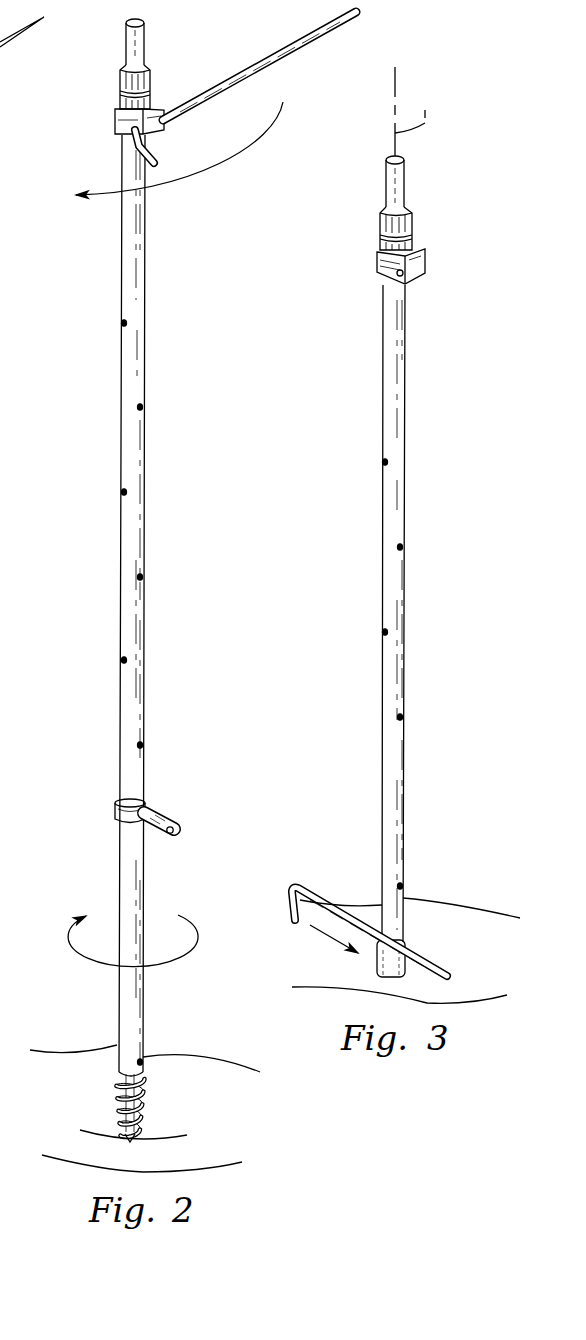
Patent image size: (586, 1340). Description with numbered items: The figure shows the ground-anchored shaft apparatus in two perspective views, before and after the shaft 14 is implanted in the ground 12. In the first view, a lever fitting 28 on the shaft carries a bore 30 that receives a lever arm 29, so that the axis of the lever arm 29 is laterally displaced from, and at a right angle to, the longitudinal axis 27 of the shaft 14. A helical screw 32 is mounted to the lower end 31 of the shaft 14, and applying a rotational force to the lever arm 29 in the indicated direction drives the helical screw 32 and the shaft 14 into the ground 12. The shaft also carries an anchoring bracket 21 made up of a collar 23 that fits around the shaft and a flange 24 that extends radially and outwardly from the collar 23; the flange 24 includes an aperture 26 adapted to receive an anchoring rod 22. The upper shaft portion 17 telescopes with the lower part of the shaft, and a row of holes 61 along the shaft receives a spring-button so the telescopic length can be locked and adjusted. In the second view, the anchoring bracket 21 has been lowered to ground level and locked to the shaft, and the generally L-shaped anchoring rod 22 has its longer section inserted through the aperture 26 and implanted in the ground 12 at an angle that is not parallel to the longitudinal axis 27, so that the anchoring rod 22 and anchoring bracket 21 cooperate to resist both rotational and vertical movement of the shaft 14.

In FIG. 3, the ground 12 is at (488, 962).
In FIG. 2, the shaft 14 is at (150, 557).
In FIG. 2, the upper shaft portion 17 is at (125, 41).
In FIG. 2, the anchoring bracket 21 is at (113, 821).
In FIG. 3, the anchoring rod 22 is at (300, 886).
In FIG. 2, the collar 23 is at (117, 806).
In FIG. 2, the flange 24 is at (165, 805).
In FIG. 2, the aperture 26 is at (172, 834).
In FIG. 3, the longitudinal axis 27 is at (428, 103).
In FIG. 2, the lever fitting 28 is at (115, 125).
In FIG. 2, the lever arm 29 is at (268, 56).
In FIG. 2, the bore 30 is at (165, 136).
In FIG. 3, the bore 30 is at (408, 282).
In FIG. 2, the lower end 31 is at (124, 1106).
In FIG. 2, the helical screw 32 is at (150, 1088).
In FIG. 2, the holes 61 is at (141, 407).
In FIG. 3, the holes 61 is at (385, 462).